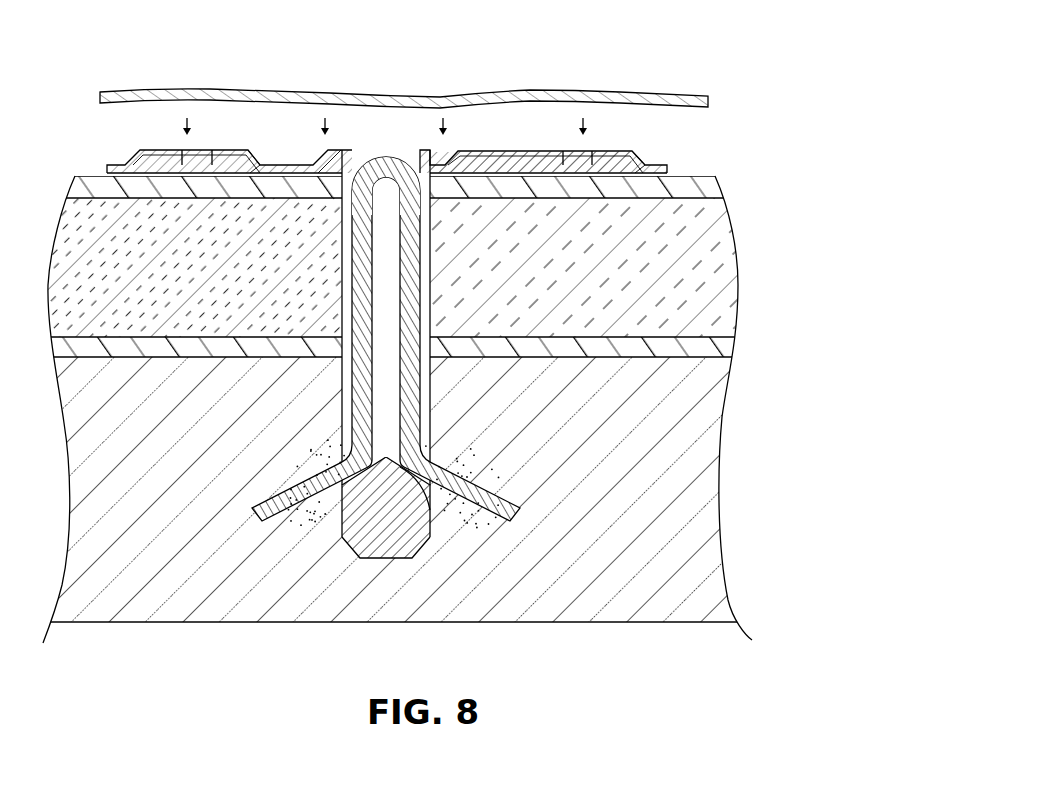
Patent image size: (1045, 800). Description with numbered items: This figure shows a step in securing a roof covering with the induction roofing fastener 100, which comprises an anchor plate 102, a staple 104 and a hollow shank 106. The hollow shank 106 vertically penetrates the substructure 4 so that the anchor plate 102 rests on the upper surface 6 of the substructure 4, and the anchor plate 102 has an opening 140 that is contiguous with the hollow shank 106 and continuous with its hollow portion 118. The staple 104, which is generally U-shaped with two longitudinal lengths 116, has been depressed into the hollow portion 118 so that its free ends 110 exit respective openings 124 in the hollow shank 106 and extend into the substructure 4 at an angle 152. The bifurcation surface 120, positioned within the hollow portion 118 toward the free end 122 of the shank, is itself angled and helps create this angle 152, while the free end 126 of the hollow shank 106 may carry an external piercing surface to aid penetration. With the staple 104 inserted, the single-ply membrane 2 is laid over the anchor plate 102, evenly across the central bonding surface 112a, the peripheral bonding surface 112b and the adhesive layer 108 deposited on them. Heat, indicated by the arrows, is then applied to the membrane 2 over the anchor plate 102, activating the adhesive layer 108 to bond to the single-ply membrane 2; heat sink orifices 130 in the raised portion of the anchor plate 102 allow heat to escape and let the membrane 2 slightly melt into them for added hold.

The single-ply membrane 2 is at (670, 93).
The substructure 4 is at (750, 177).
The upper surface 6 is at (693, 174).
The induction roofing fastener 100 is at (234, 53).
The anchor plate 102 is at (680, 160).
The staple 104 is at (371, 150).
The hollow shank 106 is at (330, 280).
The adhesive layer 108 is at (148, 148).
The free ends 110 is at (258, 500).
The central bonding surface 112a is at (448, 152).
The peripheral bonding surface 112b is at (613, 150).
The longitudinal lengths 116 is at (358, 376).
The hollow portion 118 is at (376, 404).
The bifurcation surface 120 is at (439, 523).
The free end of the hollow shank 122 is at (370, 563).
The openings 124 is at (338, 462).
The free end of the hollow shank 126 is at (343, 540).
The heat sink orifices 130 is at (201, 149).
The opening in the anchor plate 140 is at (408, 148).
The angle 152 is at (328, 510).